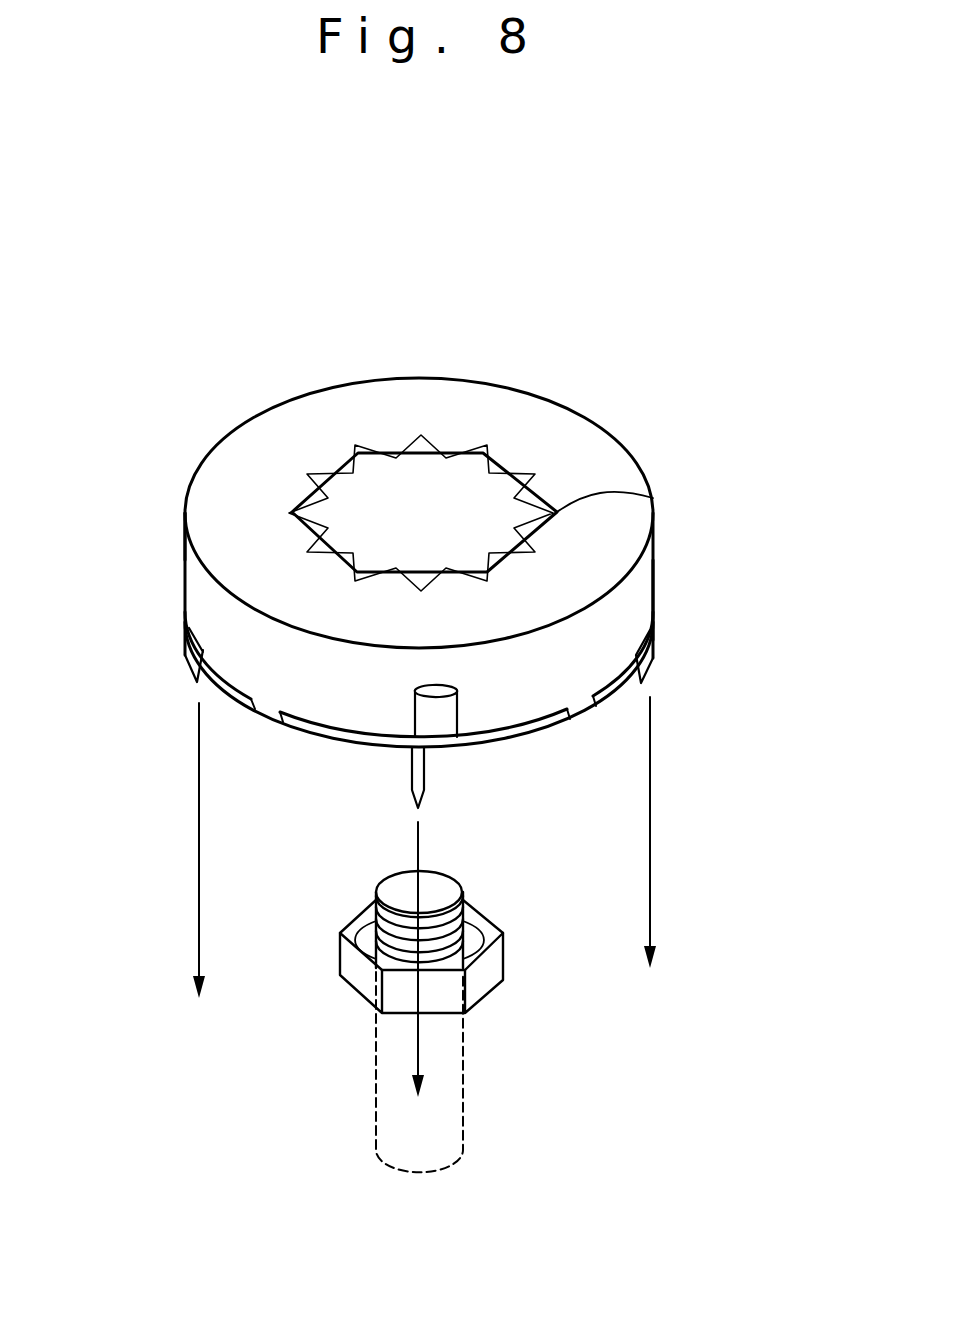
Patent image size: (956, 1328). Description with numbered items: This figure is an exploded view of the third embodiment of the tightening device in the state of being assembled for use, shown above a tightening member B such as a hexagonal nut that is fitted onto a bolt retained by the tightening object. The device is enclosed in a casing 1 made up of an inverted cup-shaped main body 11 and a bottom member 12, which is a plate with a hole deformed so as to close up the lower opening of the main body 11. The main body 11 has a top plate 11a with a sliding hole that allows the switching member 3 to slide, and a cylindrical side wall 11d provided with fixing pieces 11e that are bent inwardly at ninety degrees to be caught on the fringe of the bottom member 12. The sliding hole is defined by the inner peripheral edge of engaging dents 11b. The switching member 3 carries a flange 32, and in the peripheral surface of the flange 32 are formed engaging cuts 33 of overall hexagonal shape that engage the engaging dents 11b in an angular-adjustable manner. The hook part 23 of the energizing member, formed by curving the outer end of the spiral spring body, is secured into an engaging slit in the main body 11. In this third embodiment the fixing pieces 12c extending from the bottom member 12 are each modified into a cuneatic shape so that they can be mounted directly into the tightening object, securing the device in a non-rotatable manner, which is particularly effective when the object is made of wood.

The casing 1 is at (524, 372).
The main body 11 is at (618, 425).
The top plate 11a is at (208, 491).
The engaging dents 11b is at (653, 498).
The cylindrical side wall 11d is at (630, 613).
The fixing pieces 11e is at (263, 707).
The bottom member 12 is at (316, 748).
The fixing pieces 12c is at (190, 660).
The hook part 23 is at (452, 713).
The switching member 3 is at (417, 445).
The flange 32 is at (438, 500).
The engaging cuts 33 is at (335, 466).
The tightening member B is at (342, 972).